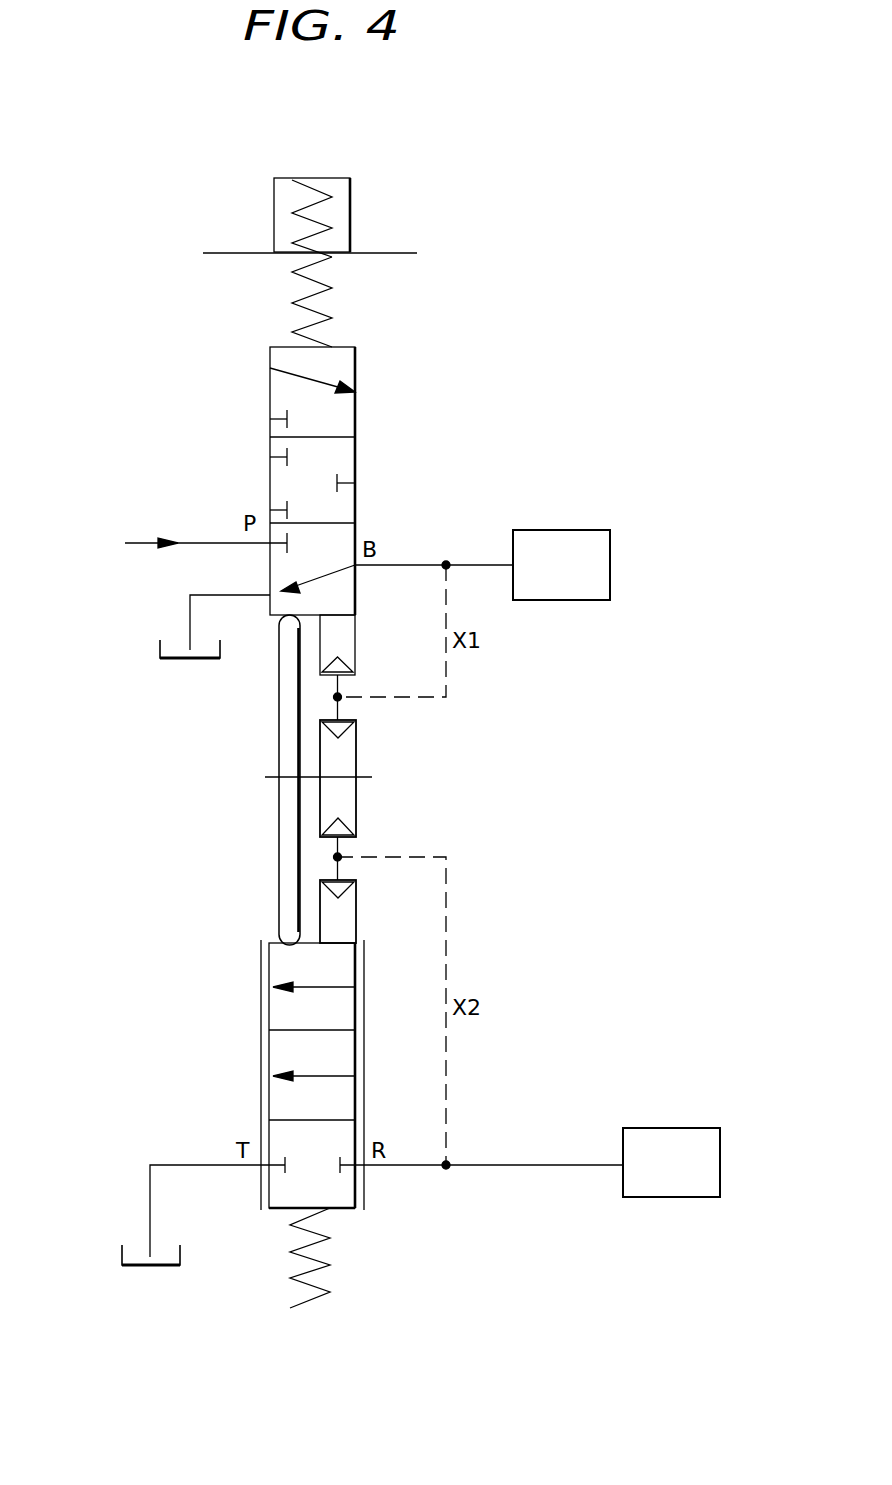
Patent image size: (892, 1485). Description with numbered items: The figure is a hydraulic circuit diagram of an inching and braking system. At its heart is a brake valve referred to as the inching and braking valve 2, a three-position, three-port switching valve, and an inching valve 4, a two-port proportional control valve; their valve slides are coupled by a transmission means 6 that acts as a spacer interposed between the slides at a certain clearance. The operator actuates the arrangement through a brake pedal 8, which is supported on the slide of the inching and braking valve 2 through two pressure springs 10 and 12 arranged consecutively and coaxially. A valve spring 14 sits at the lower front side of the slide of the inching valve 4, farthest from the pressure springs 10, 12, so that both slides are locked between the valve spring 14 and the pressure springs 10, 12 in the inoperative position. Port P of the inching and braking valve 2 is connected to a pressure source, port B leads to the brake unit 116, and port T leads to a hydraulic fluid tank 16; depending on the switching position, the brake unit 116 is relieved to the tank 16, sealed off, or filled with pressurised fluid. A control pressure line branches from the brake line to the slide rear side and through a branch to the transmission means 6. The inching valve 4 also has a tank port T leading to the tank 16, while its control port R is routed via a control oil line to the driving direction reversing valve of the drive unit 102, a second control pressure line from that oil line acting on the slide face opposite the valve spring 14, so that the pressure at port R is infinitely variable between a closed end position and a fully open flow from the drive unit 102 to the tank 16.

The inching and braking valve 2 is at (355, 402).
The inching valve 4 is at (268, 997).
The transmission means 6 is at (279, 833).
The brake pedal 8 is at (350, 180).
The pressure spring 10 is at (332, 233).
The pressure spring 12 is at (332, 290).
The valve spring 14 is at (330, 1265).
The hydraulic fluid tank 16 is at (185, 661).
The drive unit 102 is at (648, 1183).
The brake unit 116 is at (538, 583).